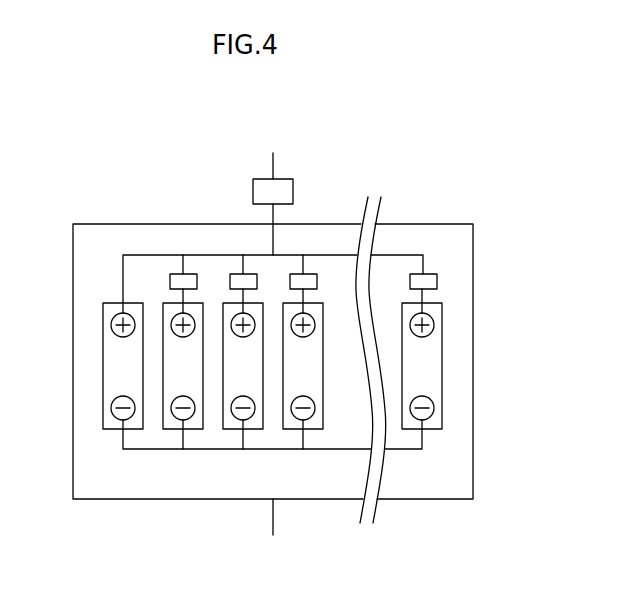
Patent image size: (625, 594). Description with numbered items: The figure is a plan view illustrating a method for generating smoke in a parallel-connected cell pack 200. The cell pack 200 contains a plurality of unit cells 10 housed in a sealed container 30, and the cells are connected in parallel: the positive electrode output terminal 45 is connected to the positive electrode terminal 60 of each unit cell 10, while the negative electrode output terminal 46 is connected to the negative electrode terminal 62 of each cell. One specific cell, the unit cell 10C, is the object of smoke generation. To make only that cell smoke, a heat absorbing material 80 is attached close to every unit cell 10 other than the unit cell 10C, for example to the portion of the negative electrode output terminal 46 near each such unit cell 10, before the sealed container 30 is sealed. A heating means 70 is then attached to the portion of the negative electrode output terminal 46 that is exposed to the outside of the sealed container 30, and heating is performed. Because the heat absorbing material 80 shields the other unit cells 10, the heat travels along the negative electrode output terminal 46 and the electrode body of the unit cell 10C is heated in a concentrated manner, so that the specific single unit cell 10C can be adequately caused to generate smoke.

The cell pack 200 is at (530, 135).
The sealed container 30 is at (474, 250).
The positive electrode output terminal 45 is at (272, 163).
The negative electrode output terminal 46 is at (272, 530).
The heating means 70 is at (289, 178).
The heat absorbing material 80 is at (179, 273).
The unit cell 10 is at (177, 430).
The unit cell which is the object of smoke generation 10C is at (113, 430).
The positive electrode terminal 60 is at (103, 323).
The negative electrode terminal 62 is at (103, 405).